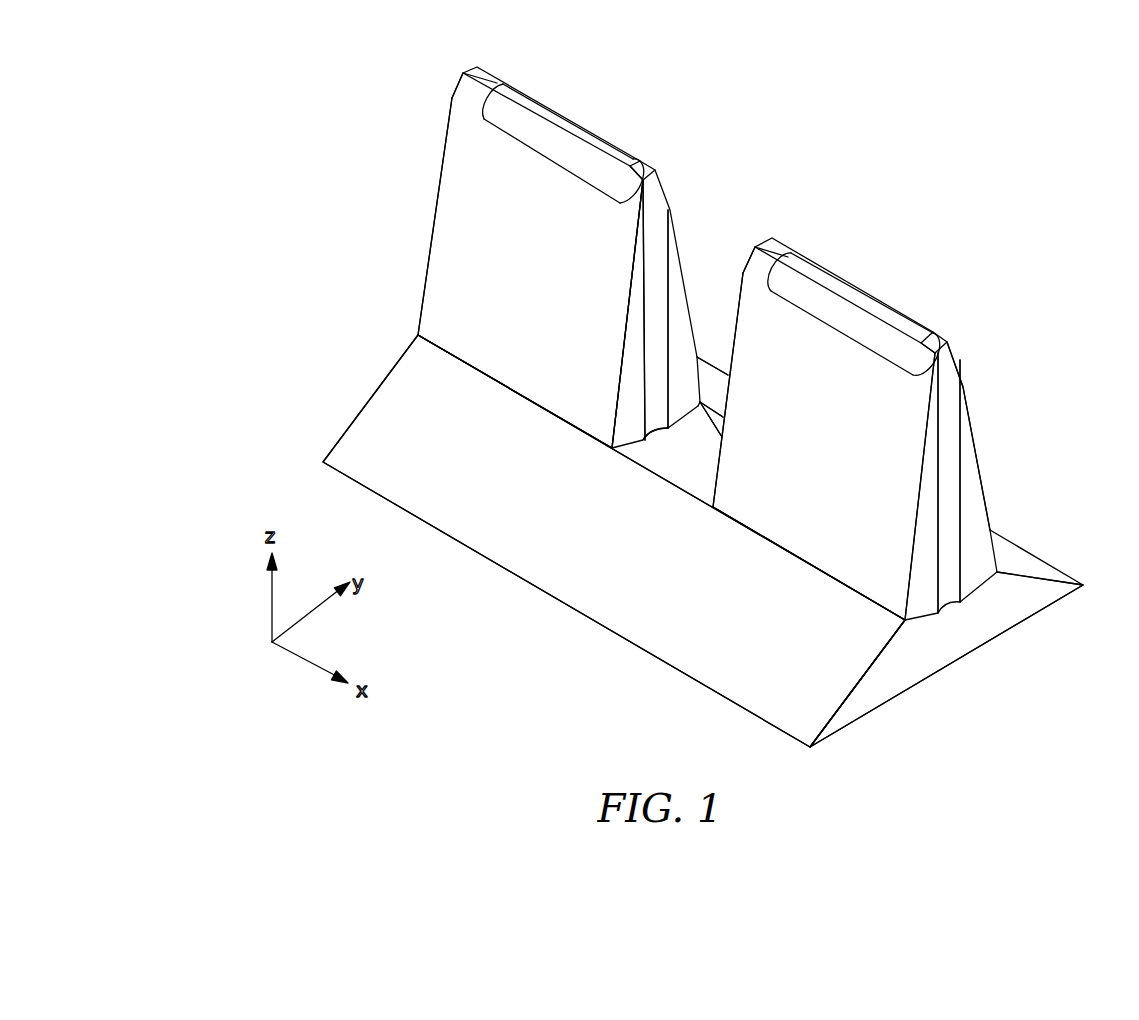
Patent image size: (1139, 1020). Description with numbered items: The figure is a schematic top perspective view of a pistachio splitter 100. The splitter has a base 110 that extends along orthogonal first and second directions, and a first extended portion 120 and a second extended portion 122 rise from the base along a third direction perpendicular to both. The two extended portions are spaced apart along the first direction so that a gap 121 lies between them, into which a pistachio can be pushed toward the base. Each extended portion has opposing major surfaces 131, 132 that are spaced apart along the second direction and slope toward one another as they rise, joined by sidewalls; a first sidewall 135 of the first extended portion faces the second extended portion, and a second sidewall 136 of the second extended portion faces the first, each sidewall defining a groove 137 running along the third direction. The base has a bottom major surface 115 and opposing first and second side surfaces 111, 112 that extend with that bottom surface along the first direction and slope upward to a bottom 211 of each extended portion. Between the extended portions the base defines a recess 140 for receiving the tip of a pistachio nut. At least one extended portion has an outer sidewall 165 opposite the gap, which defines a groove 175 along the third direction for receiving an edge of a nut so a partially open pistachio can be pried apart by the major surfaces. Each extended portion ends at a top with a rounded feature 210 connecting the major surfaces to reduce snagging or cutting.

The pistachio splitter 100 is at (297, 143).
The base 110 is at (862, 698).
The first side surface 111 is at (608, 583).
The second side surface 112 is at (1022, 560).
The bottom major surface 115 is at (1047, 608).
The first extended portion 120 is at (462, 142).
The gap 121 is at (728, 203).
The second extended portion 122 is at (910, 395).
The major surface 131 is at (522, 250).
The major surface 132 is at (670, 208).
The first sidewall 135 is at (630, 393).
The second sidewall 136 is at (717, 465).
The groove 137 is at (652, 312).
The recess 140 is at (668, 448).
The outer sidewall 165 is at (920, 593).
The groove 175 is at (948, 480).
The rounded feature 210 is at (553, 130).
The bottom 211 is at (473, 373).